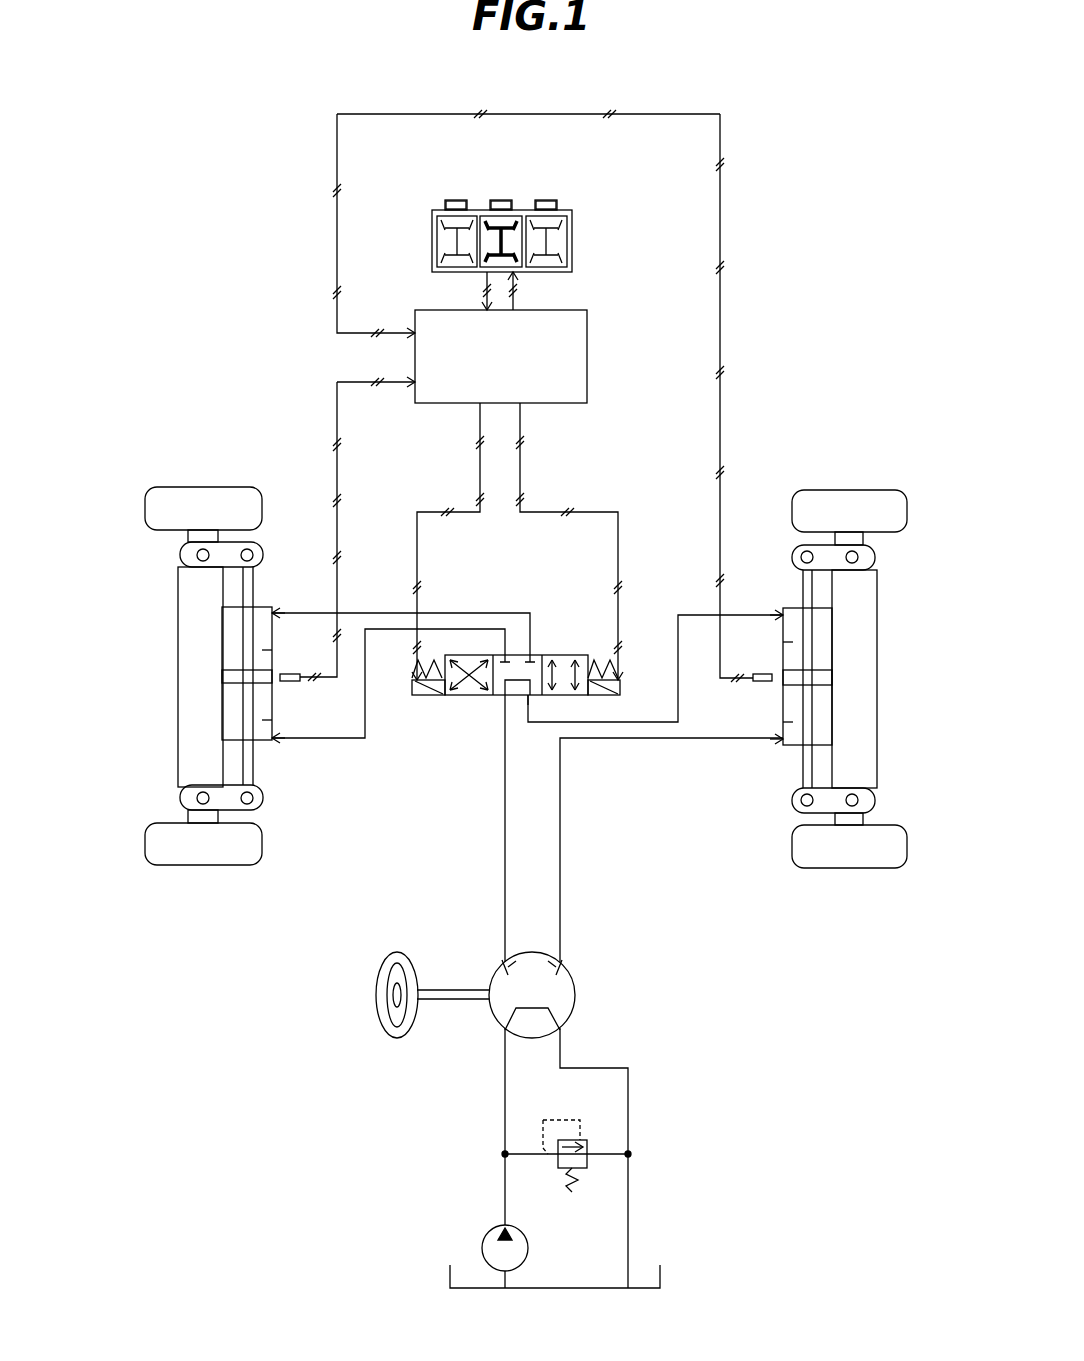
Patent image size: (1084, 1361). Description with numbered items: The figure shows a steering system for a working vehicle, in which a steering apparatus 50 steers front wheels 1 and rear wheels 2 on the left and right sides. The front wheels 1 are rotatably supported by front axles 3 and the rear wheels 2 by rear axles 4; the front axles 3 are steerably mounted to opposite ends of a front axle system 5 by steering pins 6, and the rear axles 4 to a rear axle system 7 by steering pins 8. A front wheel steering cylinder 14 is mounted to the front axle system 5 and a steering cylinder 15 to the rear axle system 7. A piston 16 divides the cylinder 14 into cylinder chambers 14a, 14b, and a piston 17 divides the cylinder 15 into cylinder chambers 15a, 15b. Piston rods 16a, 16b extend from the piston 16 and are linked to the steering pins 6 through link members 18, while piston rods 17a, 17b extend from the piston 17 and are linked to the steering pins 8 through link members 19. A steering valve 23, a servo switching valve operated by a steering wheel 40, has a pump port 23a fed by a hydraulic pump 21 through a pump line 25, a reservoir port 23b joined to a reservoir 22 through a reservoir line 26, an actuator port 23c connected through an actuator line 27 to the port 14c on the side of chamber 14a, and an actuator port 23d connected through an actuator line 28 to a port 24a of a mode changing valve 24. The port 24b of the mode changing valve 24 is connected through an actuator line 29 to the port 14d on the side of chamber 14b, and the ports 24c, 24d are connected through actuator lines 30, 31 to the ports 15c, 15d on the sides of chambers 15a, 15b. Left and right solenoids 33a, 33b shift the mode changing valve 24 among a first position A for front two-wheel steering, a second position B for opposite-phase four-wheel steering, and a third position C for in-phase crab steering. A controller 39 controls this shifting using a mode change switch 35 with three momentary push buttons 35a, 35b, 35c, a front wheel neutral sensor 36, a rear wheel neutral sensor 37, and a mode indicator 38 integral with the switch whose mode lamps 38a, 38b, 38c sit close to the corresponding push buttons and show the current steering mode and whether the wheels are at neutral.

The front wheel 1 is at (907, 512).
The rear wheel 2 is at (145, 508).
The front axle 3 is at (863, 537).
The rear axle 4 is at (188, 536).
The front axle system 5 is at (877, 680).
The steering pin 6 is at (852, 565).
The rear axle system 7 is at (178, 677).
The steering pin 8 is at (203, 562).
The front wheel steering cylinder 14 is at (772, 665).
The cylinder chamber 14a is at (783, 722).
The cylinder chamber 14b is at (783, 642).
The port 14c is at (780, 742).
The port 14d is at (781, 611).
The steering cylinder 15 is at (283, 664).
The cylinder chamber 15a is at (272, 720).
The cylinder chamber 15b is at (272, 650).
The port 15c is at (272, 742).
The port 15d is at (300, 605).
The piston 16 is at (841, 679).
The piston rod 16a is at (797, 772).
The piston rod 16b is at (805, 573).
The piston 17 is at (214, 676).
The piston rod 17a is at (257, 772).
The piston rod 17b is at (263, 552).
The link member 18 is at (807, 548).
The link member 19 is at (247, 548).
The hydraulic pump 21 is at (484, 1232).
The reservoir 22 is at (662, 1276).
The steering valve 23 is at (536, 983).
The pump port 23a is at (502, 1030).
The reservoir port 23b is at (565, 1030).
The actuator port 23c is at (562, 960).
The actuator port 23d is at (502, 960).
The mode changing valve 24 is at (530, 670).
The port 24a is at (503, 700).
The port 24b is at (530, 700).
The port 24c is at (505, 653).
The port 24d is at (531, 653).
The pump line 25 is at (503, 1103).
The reservoir line 26 is at (628, 1113).
The actuator line 27 is at (560, 828).
The actuator line 28 is at (505, 828).
The actuator line 29 is at (655, 675).
The actuator line 30 is at (352, 743).
The actuator line 31 is at (378, 613).
The solenoid 33a is at (420, 698).
The solenoid 33b is at (625, 685).
The mode change switch 35 is at (539, 178).
The push button 35a is at (500, 200).
The push button 35b is at (455, 200).
The push button 35c is at (547, 200).
The front wheel neutral sensor 36 is at (770, 683).
The rear wheel neutral sensor 37 is at (294, 682).
The mode indicator 38 is at (505, 256).
The mode lamp 38a is at (481, 262).
The mode lamp 38b is at (437, 243).
The mode lamp 38c is at (566, 265).
The controller 39 is at (588, 357).
The steering wheel 40 is at (376, 995).
The steering apparatus 50 is at (795, 1060).